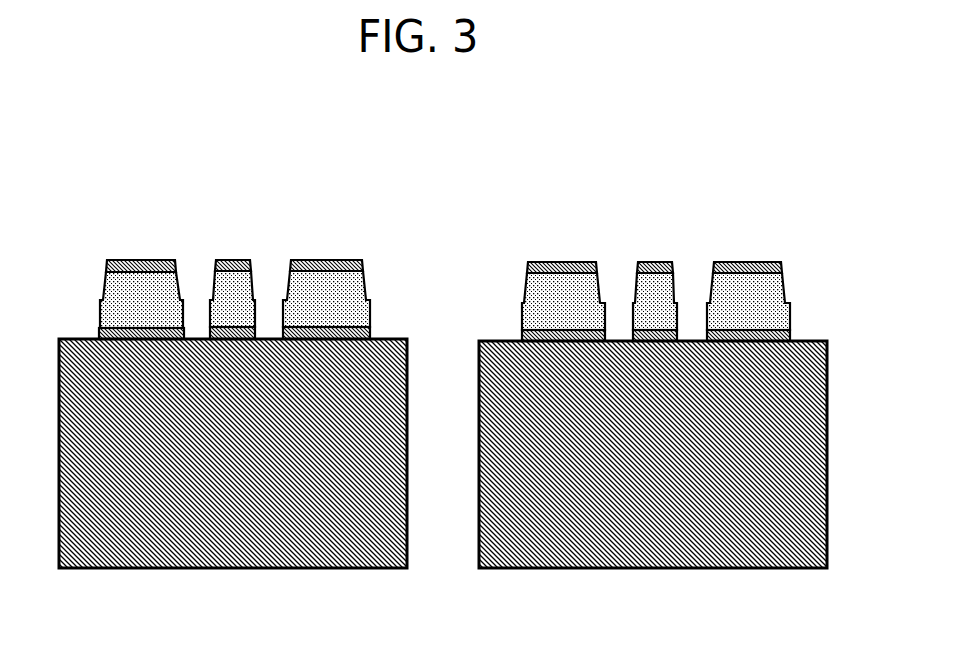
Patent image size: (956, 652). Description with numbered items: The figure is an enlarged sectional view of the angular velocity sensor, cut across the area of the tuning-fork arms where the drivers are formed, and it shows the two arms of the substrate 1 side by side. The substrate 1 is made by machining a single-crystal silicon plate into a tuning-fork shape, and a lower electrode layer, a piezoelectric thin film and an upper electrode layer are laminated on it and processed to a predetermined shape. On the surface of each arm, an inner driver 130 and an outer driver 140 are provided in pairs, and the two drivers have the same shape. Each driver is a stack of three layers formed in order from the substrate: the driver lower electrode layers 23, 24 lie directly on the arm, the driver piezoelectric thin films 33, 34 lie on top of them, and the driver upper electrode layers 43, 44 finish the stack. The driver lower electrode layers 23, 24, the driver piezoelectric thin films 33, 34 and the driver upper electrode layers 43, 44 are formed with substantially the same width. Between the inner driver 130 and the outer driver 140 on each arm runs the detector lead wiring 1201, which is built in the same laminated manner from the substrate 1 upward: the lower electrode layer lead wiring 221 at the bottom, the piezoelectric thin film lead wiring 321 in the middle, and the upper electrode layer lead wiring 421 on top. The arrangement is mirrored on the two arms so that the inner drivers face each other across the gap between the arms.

The substrate 1 is at (68, 453).
The outer driver 140 is at (178, 205).
The inner driver 130 is at (295, 215).
The detector lead wiring 1201 is at (337, 168).
The driver lower electrode layer 24 is at (105, 328).
The driver piezoelectric thin film 34 is at (127, 292).
The driver upper electrode layer 44 is at (150, 260).
The driver lower electrode layer 23 is at (295, 332).
The driver piezoelectric thin film 33 is at (328, 285).
The driver upper electrode layer 43 is at (360, 262).
The lower electrode layer lead wiring 221 is at (225, 328).
The piezoelectric thin film lead wiring 321 is at (233, 285).
The upper electrode layer lead wiring 421 is at (250, 262).